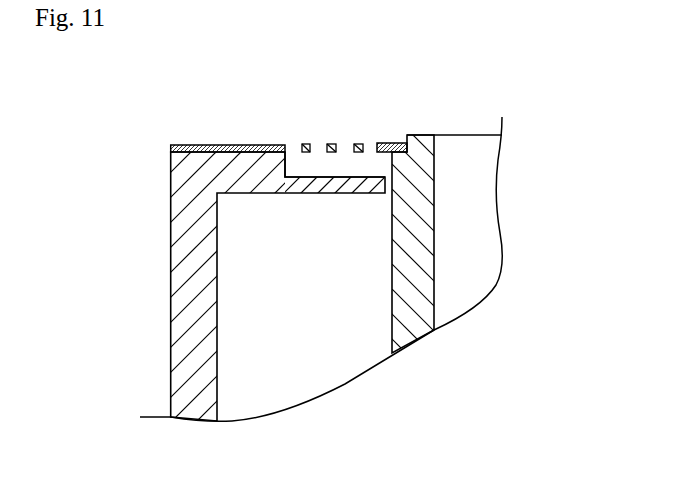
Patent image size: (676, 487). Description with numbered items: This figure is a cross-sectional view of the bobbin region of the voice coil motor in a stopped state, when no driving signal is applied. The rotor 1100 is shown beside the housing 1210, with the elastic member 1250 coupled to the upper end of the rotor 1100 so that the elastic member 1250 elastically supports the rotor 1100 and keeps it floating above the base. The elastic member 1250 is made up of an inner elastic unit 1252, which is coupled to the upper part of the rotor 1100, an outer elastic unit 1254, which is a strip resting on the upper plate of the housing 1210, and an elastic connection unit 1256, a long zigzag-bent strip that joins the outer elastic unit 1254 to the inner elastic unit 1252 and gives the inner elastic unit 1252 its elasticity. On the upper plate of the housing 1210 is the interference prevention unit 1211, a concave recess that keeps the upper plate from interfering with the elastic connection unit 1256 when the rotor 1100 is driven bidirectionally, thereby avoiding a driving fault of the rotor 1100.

The rotor 1100 is at (441, 248).
The housing 1210 is at (165, 253).
The interference prevention unit 1211 is at (294, 168).
The elastic member 1250 is at (279, 243).
The inner elastic unit 1252 is at (390, 143).
The outer elastic unit 1254 is at (225, 143).
The elastic connection unit 1256 is at (332, 143).